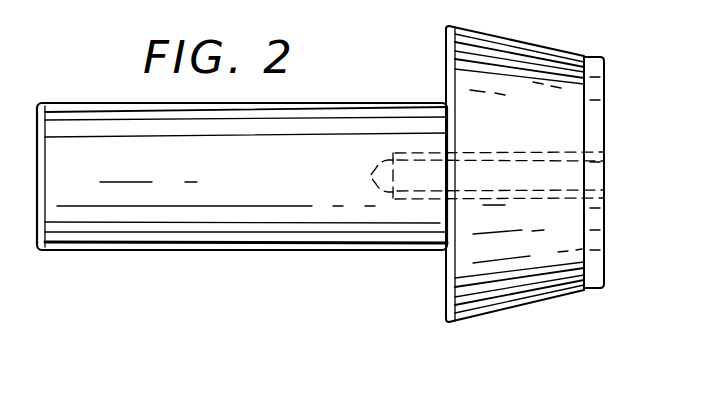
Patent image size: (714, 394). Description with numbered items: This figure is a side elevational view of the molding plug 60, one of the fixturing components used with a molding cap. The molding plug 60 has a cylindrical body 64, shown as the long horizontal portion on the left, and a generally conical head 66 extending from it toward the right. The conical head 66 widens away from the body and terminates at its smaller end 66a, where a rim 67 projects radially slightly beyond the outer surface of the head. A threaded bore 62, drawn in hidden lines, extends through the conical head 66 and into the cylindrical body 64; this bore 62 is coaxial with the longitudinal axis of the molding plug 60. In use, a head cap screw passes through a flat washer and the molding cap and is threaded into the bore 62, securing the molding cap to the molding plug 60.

The molding plug 60 is at (81, 103).
The threaded bore 62 is at (585, 190).
The cylindrical body 64 is at (177, 250).
The conical head 66 is at (500, 36).
The smaller end 66a is at (578, 293).
The rim 67 is at (598, 281).